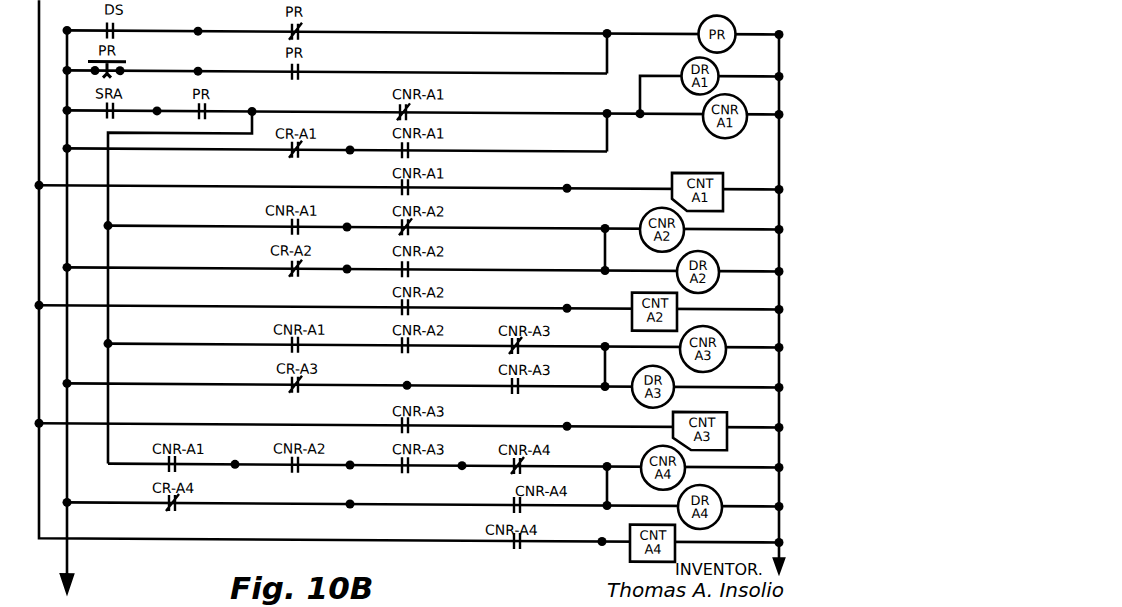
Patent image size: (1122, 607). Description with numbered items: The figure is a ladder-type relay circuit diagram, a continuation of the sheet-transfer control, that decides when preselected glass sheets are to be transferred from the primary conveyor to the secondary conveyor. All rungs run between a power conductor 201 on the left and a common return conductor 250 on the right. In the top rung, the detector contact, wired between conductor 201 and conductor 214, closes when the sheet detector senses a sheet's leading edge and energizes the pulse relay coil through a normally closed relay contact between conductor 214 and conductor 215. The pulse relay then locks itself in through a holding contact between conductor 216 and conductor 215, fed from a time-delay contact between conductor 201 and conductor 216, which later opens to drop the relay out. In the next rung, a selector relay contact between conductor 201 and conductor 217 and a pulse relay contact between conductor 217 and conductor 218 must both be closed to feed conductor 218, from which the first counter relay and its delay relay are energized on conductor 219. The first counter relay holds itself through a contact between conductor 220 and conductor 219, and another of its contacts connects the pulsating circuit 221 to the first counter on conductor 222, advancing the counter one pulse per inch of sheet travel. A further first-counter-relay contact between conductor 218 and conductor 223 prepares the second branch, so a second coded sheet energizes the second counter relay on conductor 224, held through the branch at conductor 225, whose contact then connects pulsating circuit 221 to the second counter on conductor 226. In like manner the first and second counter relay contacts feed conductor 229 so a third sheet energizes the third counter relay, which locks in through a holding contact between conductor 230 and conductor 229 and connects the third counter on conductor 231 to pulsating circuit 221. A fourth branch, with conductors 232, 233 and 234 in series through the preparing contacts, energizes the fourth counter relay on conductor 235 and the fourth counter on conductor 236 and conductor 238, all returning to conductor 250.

The power conductor 201 is at (145, 150).
The conductor between detector contact DS and contact PR 214 is at (213, 12).
The conductor to relay coil PR 215 is at (620, 12).
The conductor between time delay contact PR and holding contact PR 216 is at (213, 54).
The conductor between contact SRA and contact PR 217 is at (170, 96).
The conductor feeding the counter relays 218 is at (237, 108).
The conductor to relay coils CNR-A1 and DR-A1 219 is at (620, 94).
The conductor in the CNR-A1 holding circuit 220 is at (363, 136).
The pulsating circuit 221 is at (189, 189).
The conductor to counter CNT-A1 222 is at (581, 177).
The conductor in the CNR-A2 relay branch 223 is at (338, 224).
The conductor to relay coil CNR-A2 224 is at (608, 221).
The conductor in the CNR-A2 holding circuit 225 is at (338, 265).
The conductor to counter CNT-A2 226 is at (580, 294).
The conductor to relay coil CNR-A3 229 is at (614, 341).
The conductor in the CNR-A3 holding circuit 230 is at (400, 383).
The conductor to counter CNT-A3 231 is at (580, 412).
The conductor in the CNR-A4 relay branch 232 is at (230, 463).
The conductor in the CNR-A4 relay branch 233 is at (350, 468).
The conductor in the CNR-A4 relay branch 234 is at (462, 468).
The conductor to relay coil CNR-A4 235 is at (590, 465).
The conductor to counter CNT-A4 236 is at (346, 498).
The conductor to counter CNT-A4 branch 238 is at (616, 530).
The return conductor 250 is at (775, 161).